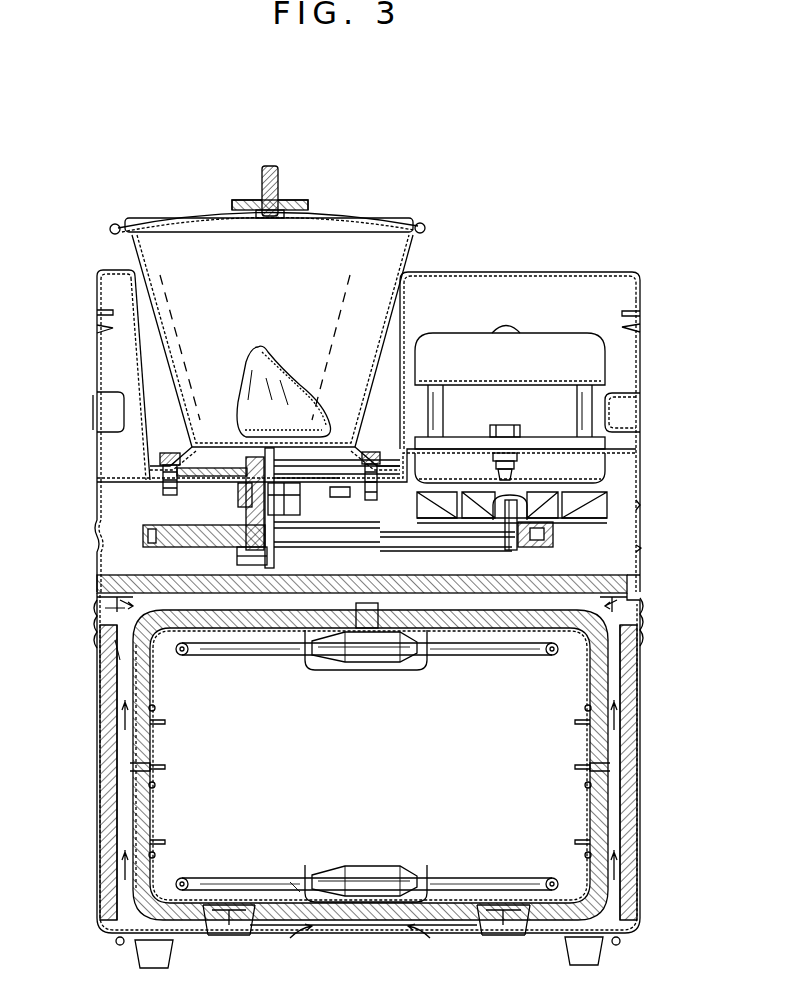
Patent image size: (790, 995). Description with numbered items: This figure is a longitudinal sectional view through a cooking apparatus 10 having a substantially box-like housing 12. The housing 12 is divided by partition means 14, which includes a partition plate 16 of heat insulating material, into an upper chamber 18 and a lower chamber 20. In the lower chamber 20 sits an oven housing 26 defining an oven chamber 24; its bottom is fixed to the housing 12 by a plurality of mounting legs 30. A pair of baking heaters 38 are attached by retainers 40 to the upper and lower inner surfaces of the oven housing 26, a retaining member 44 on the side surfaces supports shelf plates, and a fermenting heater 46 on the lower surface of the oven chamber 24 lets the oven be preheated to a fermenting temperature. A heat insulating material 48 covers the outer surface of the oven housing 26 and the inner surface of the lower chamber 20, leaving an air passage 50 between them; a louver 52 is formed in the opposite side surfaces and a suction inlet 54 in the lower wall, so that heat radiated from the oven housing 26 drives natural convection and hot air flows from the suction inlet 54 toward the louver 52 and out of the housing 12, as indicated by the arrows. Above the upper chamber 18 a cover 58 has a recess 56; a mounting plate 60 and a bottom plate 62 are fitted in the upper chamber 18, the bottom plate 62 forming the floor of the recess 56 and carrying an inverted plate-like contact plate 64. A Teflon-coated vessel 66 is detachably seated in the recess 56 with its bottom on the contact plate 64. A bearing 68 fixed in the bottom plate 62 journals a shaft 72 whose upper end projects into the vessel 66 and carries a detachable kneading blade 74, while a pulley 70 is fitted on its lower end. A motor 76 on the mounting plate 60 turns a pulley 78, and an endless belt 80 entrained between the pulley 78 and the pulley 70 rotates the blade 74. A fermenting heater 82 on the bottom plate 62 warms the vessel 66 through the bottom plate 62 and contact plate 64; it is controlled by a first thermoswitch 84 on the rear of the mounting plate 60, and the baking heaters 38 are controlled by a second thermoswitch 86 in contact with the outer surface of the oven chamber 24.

The cooking apparatus 10 is at (527, 257).
The housing 12 is at (640, 482).
The partition means 14 is at (574, 573).
The partition plate 16 is at (596, 580).
The upper chamber 18 is at (96, 515).
The lower chamber 20 is at (96, 614).
The oven chamber 24 is at (146, 805).
The oven housing 26 is at (568, 632).
The mounting legs 30 is at (240, 922).
The baking heaters 38 is at (496, 655).
The retainers 40 is at (412, 670).
The retaining member 44 is at (152, 754).
The fermenting heater 46 is at (298, 894).
The heat insulating material 48 is at (151, 682).
The air passage 50 is at (116, 851).
The louver 52 is at (96, 646).
The suction inlet 54 is at (373, 930).
The recess 56 is at (142, 366).
The cover 58 is at (96, 294).
The mounting plate 60 is at (124, 478).
The bottom plate 62 is at (192, 484).
The contact plate 64 is at (188, 456).
The vessel 66 is at (406, 246).
The bearing 68 is at (300, 498).
The pulley 70 is at (158, 548).
The shaft 72 is at (262, 560).
The kneading blade 74 is at (258, 346).
The motor 76 is at (558, 332).
The pulley 78 is at (490, 540).
The endless belt 80 is at (436, 538).
The fermenting heater 82 is at (216, 480).
The first thermoswitch 84 is at (344, 496).
The second thermoswitch 86 is at (368, 602).